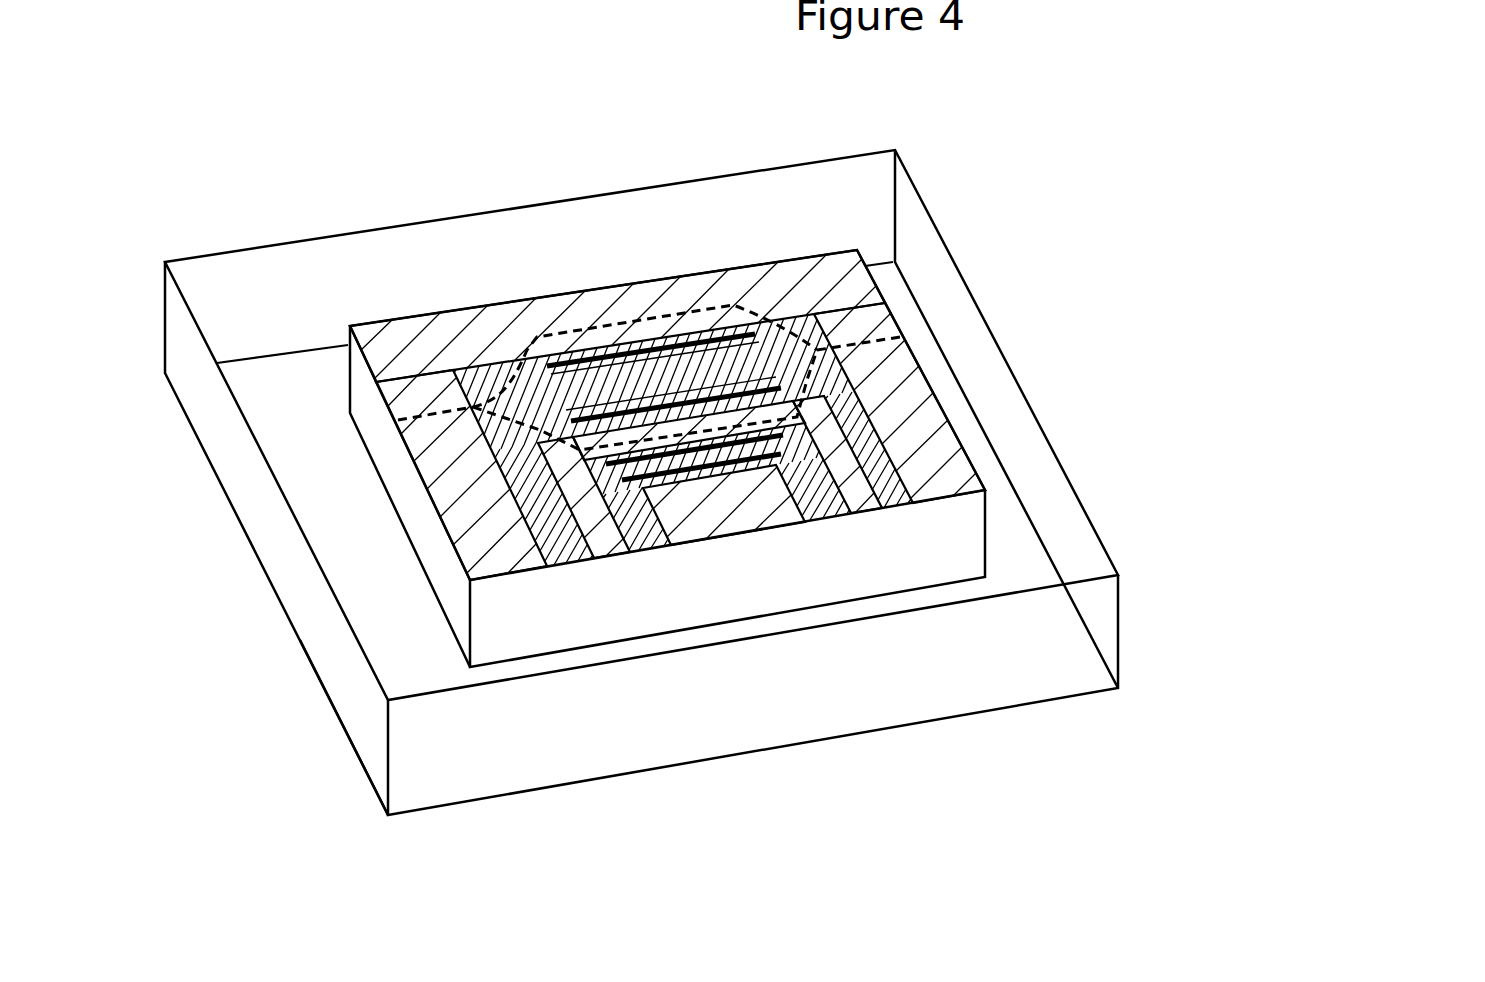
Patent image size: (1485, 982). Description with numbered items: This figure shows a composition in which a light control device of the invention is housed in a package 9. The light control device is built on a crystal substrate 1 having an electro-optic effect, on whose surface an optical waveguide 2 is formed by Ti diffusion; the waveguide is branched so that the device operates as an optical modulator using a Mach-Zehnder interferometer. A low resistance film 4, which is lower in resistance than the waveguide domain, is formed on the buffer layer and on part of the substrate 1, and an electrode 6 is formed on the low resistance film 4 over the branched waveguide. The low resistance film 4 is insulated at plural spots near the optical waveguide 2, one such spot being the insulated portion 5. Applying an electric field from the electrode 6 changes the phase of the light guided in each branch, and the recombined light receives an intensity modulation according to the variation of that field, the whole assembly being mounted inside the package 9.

The crystal substrate 1 is at (737, 617).
The optical waveguide 2 is at (858, 332).
The low resistance film 4 is at (893, 500).
The insulated portion 5 is at (662, 340).
The electrode 6 is at (722, 540).
The package 9 is at (345, 742).